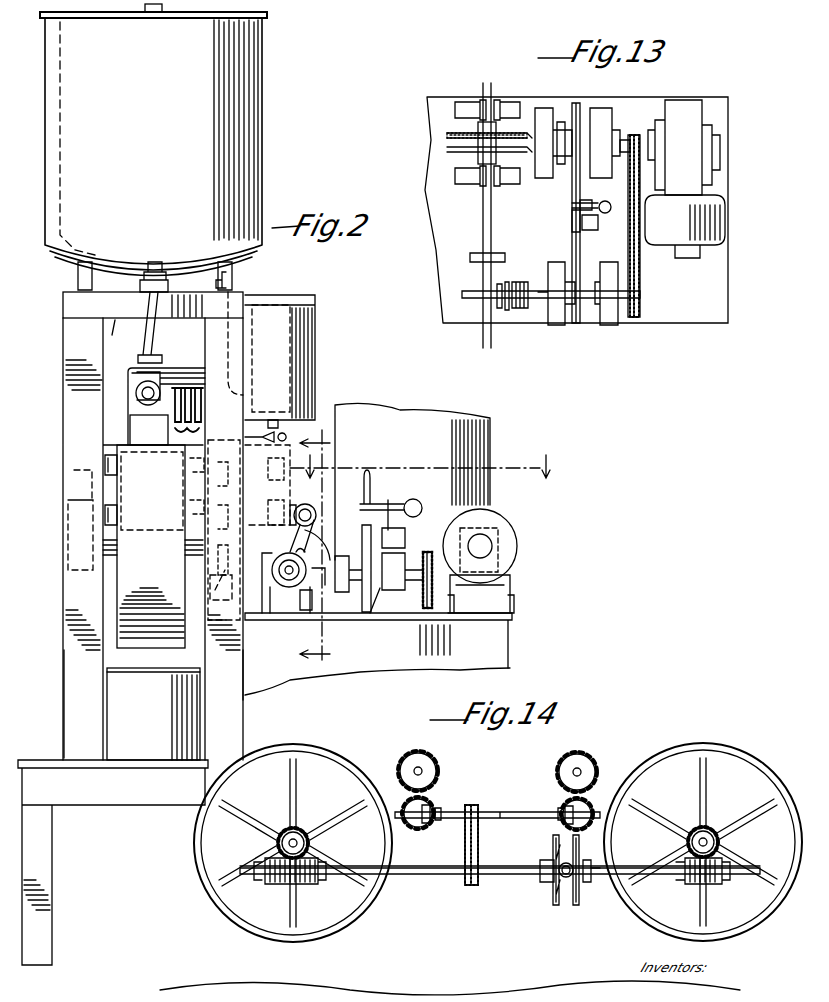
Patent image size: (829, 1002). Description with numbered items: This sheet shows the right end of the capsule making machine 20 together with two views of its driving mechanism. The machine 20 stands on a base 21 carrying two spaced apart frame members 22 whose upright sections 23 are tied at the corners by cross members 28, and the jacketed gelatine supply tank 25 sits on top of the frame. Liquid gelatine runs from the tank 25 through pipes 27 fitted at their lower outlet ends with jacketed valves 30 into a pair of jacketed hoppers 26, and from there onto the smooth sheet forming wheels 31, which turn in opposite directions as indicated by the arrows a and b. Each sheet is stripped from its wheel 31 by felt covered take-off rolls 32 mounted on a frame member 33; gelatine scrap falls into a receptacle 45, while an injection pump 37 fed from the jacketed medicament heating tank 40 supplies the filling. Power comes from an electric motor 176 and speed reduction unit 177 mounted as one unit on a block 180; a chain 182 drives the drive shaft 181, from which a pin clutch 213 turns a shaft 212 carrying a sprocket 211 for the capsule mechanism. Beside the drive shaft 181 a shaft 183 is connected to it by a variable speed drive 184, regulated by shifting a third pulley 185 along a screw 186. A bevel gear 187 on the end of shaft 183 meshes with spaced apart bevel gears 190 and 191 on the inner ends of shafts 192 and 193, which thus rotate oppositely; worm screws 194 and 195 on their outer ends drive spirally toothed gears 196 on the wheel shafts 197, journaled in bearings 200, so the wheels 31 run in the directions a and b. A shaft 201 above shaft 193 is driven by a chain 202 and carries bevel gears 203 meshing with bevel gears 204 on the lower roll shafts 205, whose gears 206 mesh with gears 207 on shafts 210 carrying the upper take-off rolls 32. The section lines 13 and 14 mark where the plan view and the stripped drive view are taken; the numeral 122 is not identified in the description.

In FIG. 2, the tank cover knob 122 is at (153, 8).
In FIG. 2, the jacketed gelatine supply tank 25 is at (262, 78).
In FIG. 2, the frame members 22 is at (66, 321).
In FIG. 2, the upright sections 23 is at (66, 633).
In FIG. 2, the base 21 is at (40, 760).
In FIG. 2, the receptacle 45 is at (140, 748).
In FIG. 2, the cross members 28 is at (120, 329).
In FIG. 2, the pipes 27 is at (152, 340).
In FIG. 2, the jacketed valves 30 is at (136, 400).
In FIG. 2, the jacketed hoppers 26 is at (140, 424).
In FIG. 2, the injection pump 37 is at (192, 408).
In FIG. 2, the frame member 33 is at (212, 418).
In FIG. 2, the jacketed medicament heating tank 40 is at (300, 352).
In FIG. 2, the capsule making machine 20 is at (358, 388).
In FIG. 2, the felt covered take-off rolls 32 is at (100, 470).
In FIG. 2, the shafts 197 is at (185, 548).
In FIG. 14, the shafts 197 is at (296, 832).
In FIG. 2, the sheet forming wheels 31 is at (150, 635).
In FIG. 14, the sheet forming wheels 31 is at (338, 753).
In FIG. 2, the gears 207 is at (216, 452).
In FIG. 14, the gears 207 is at (438, 765).
In FIG. 2, the shafts 210 is at (258, 470).
In FIG. 14, the shafts 210 is at (418, 771).
In FIG. 2, the shafts 205 is at (262, 514).
In FIG. 2, the gears 206 is at (217, 555).
In FIG. 14, the gears 206 is at (445, 808).
In FIG. 2, the bearings 200 is at (68, 582).
In FIG. 2, the section line 13- 13 is at (429, 465).
In FIG. 2, the section line 14- 14 is at (315, 546).
In FIG. 2, the block 180 is at (500, 613).
In FIG. 13, the block 180 is at (720, 277).
In FIG. 2, the speed reduction unit 177 is at (517, 546).
In FIG. 13, the speed reduction unit 177 is at (690, 120).
In FIG. 2, the electric motor 176 is at (510, 532).
In FIG. 13, the electric motor 176 is at (710, 220).
In FIG. 2, the third pulley 185 is at (358, 538).
In FIG. 13, the third pulley 185 is at (572, 225).
In FIG. 2, the screw 186 is at (410, 520).
In FIG. 13, the screw 186 is at (598, 192).
In FIG. 2, the chain 182 is at (430, 552).
In FIG. 13, the chain 182 is at (640, 262).
In FIG. 2, the drive shaft 181 is at (382, 612).
In FIG. 13, the drive shaft 181 is at (595, 300).
In FIG. 2, the shaft 193 is at (285, 570).
In FIG. 13, the shaft 193 is at (483, 221).
In FIG. 14, the shaft 193 is at (420, 868).
In FIG. 2, the pin clutch 213 is at (305, 590).
In FIG. 13, the pin clutch 213 is at (524, 282).
In FIG. 2, the bevel gears 204 is at (305, 503).
In FIG. 14, the bevel gears 204 is at (428, 805).
In FIG. 2, the shaft 201 is at (312, 508).
In FIG. 14, the shaft 201 is at (515, 812).
In FIG. 2, the bevel gear 191 is at (322, 548).
In FIG. 13, the bevel gear 191 is at (447, 150).
In FIG. 14, the bevel gear 191 is at (555, 905).
In FIG. 13, the shaft 192 is at (483, 87).
In FIG. 14, the shaft 192 is at (590, 882).
In FIG. 13, the bevel gear 187 is at (515, 130).
In FIG. 14, the bevel gear 187 is at (566, 877).
In FIG. 13, the bevel gear 190 is at (447, 135).
In FIG. 14, the bevel gear 190 is at (576, 905).
In FIG. 13, the shaft 183 is at (565, 130).
In FIG. 14, the shaft 183 is at (545, 882).
In FIG. 13, the variable speed drive 184 is at (556, 201).
In FIG. 13, the shaft 212 is at (470, 300).
In FIG. 13, the sprocket 211 is at (500, 308).
In FIG. 14, the spirally toothed gears 196 is at (310, 845).
In FIG. 14, the worm screw 195 is at (300, 884).
In FIG. 14, the worm screw 194 is at (690, 884).
In FIG. 14, the bevel gears 203 is at (420, 827).
In FIG. 14, the chain 202 is at (480, 840).
In FIG. 14, the arrow a is at (783, 768).
In FIG. 14, the arrow b is at (192, 795).